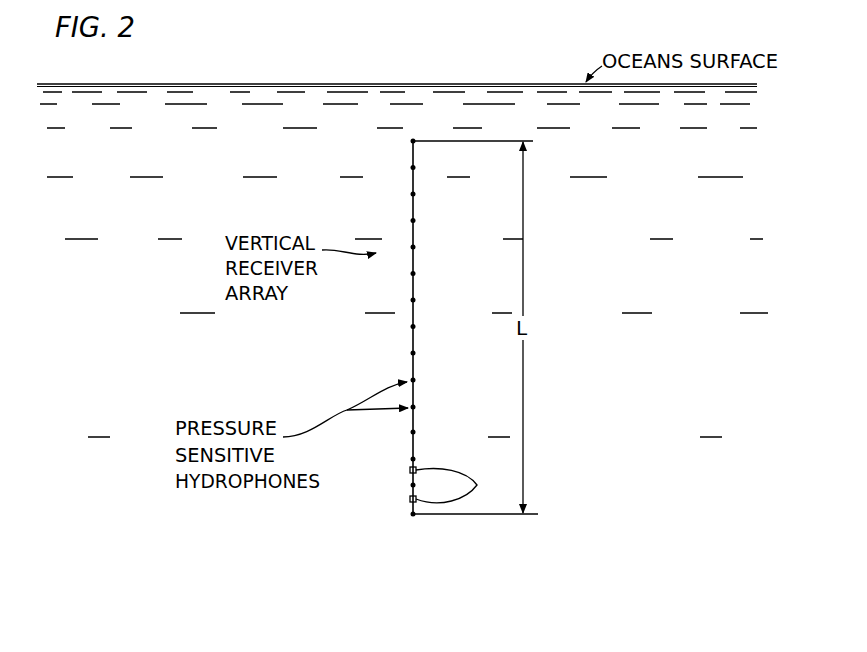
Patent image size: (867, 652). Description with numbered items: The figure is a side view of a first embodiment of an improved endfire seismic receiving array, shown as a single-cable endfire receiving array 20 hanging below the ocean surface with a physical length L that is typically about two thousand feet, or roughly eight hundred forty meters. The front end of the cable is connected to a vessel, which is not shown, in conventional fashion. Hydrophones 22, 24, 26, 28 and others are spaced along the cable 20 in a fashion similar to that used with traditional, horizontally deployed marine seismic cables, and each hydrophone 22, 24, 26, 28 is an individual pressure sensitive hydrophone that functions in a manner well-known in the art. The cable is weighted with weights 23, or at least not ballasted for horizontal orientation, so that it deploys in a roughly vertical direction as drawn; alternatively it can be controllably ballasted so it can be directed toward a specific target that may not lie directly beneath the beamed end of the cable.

The single-cable endfire receiving array 20 is at (412, 338).
The hydrophone 22 is at (412, 514).
The weight 23 is at (461, 486).
The hydrophone 24 is at (417, 484).
The hydrophone 26 is at (411, 459).
The hydrophone 28 is at (417, 432).